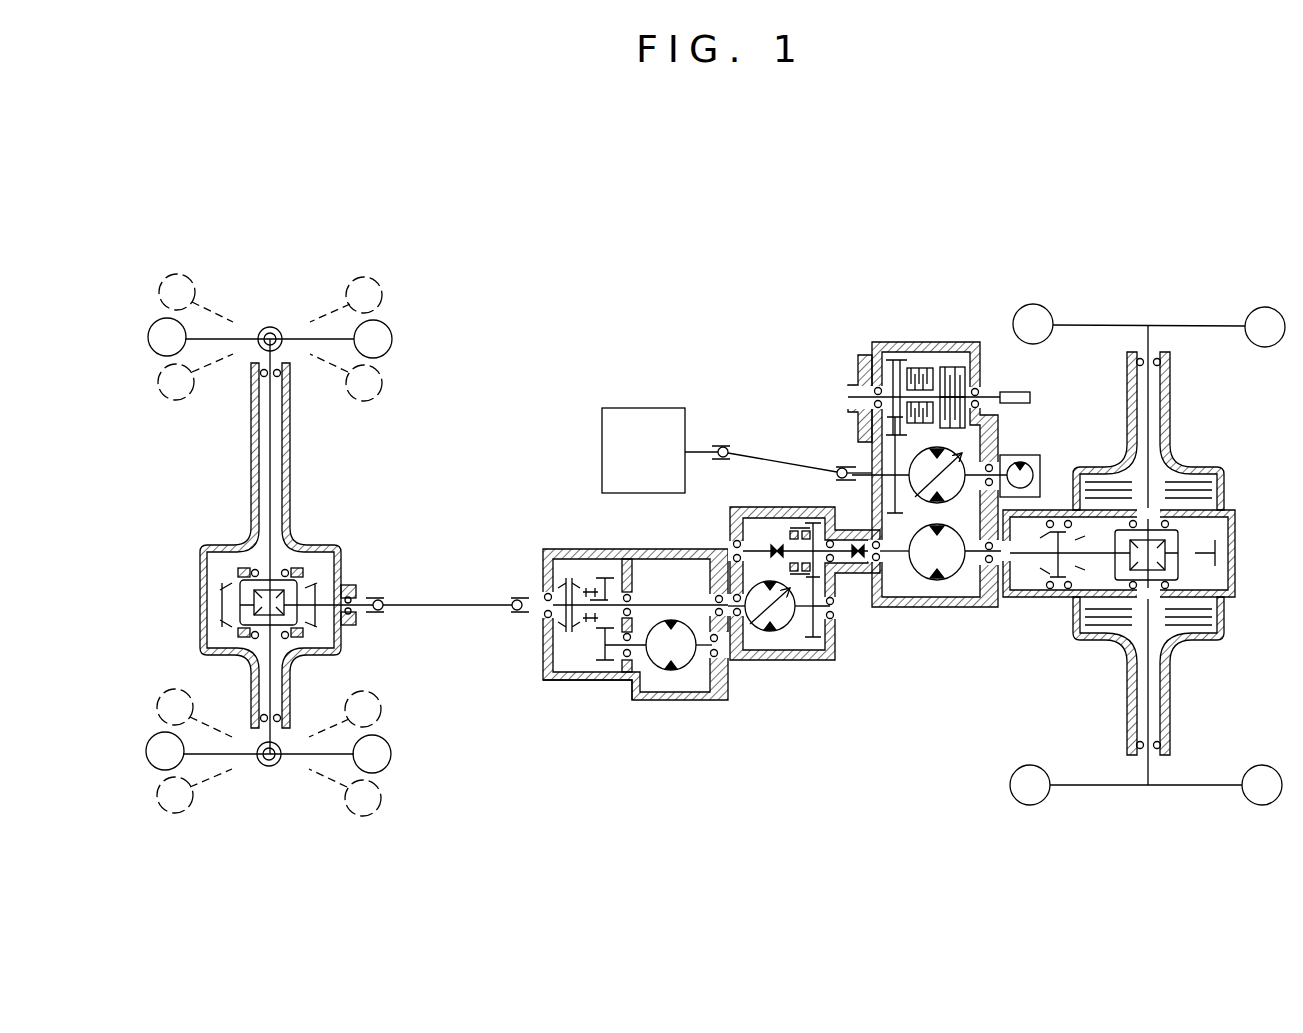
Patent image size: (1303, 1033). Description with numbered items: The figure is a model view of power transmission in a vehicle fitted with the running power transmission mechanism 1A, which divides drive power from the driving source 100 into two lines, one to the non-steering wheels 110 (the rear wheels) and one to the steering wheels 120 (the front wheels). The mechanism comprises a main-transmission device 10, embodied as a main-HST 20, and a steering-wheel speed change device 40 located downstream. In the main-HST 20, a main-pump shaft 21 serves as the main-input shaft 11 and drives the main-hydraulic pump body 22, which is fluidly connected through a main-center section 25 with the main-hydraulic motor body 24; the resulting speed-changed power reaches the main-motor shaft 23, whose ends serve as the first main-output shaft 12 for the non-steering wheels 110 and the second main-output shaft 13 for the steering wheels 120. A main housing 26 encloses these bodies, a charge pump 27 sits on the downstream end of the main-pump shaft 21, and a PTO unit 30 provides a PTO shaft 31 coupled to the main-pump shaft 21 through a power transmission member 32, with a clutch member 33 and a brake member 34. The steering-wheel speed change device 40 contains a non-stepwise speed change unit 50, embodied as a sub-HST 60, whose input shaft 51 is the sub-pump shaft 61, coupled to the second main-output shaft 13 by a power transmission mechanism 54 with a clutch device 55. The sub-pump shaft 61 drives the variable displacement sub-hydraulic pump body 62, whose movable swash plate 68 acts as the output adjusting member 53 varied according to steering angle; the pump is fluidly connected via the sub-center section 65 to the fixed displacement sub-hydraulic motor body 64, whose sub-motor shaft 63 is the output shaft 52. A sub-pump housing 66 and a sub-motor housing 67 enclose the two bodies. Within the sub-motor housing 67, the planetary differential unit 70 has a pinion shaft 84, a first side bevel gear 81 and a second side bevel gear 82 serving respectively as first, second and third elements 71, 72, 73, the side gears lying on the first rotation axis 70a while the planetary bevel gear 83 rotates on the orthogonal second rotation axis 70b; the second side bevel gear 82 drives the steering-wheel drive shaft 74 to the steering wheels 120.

The running power transmission mechanism 1A is at (868, 200).
The main-transmission device 10 is at (922, 467).
The main-HST 20 is at (922, 467).
The main-input shaft 11 is at (891, 424).
The main-pump shaft 21 is at (856, 470).
The first main-output shaft 12 is at (969, 591).
The main-motor shaft 23 is at (966, 607).
The second main-output shaft 13 is at (888, 607).
The main-hydraulic pump body 22 is at (1000, 440).
The main-hydraulic motor body 24 is at (948, 588).
The main-center section 25 is at (1005, 600).
The main housing 26 is at (866, 608).
The charge pump 27 is at (1042, 463).
The PTO unit 30 is at (897, 390).
The PTO shaft 31 is at (1000, 396).
The power transmission member 32 is at (890, 358).
The clutch member 33 is at (923, 363).
The brake member 34 is at (952, 360).
The steering-wheel speed change device 40 is at (707, 765).
The non-stepwise speed change unit 50 is at (821, 622).
The sub-HST 60 is at (821, 622).
The input shaft 51 is at (832, 637).
The sub-pump shaft 61 is at (815, 657).
The output shaft 52 is at (628, 690).
The sub-motor shaft 63 is at (624, 675).
The output adjusting member 53 is at (796, 702).
The movable swash plate 68 is at (755, 662).
The power transmission mechanism 54 is at (818, 525).
The clutch device 55 is at (798, 530).
The sub-hydraulic pump body 62 is at (783, 640).
The sub-hydraulic motor body 64 is at (690, 675).
The sub-center section 65 is at (742, 705).
The sub-pump housing 66 is at (748, 505).
The sub-motor housing 67 is at (712, 558).
The planetary differential unit 70 is at (591, 597).
The first rotation axis 70a is at (662, 558).
The second rotation axis 70b is at (563, 672).
The first element 71 is at (570, 550).
The pinion shaft 84 is at (576, 585).
The second element 72 is at (623, 556).
The first side bevel gear 81 is at (600, 578).
The third element 73 is at (516, 583).
The second side bevel gear 82 is at (553, 598).
The steering-wheel drive shaft 74 is at (527, 610).
The planetary bevel gear 83 is at (563, 590).
The driving source 100 is at (640, 425).
The non-steering wheels 110 is at (1264, 310).
The steering wheels 120 is at (380, 344).